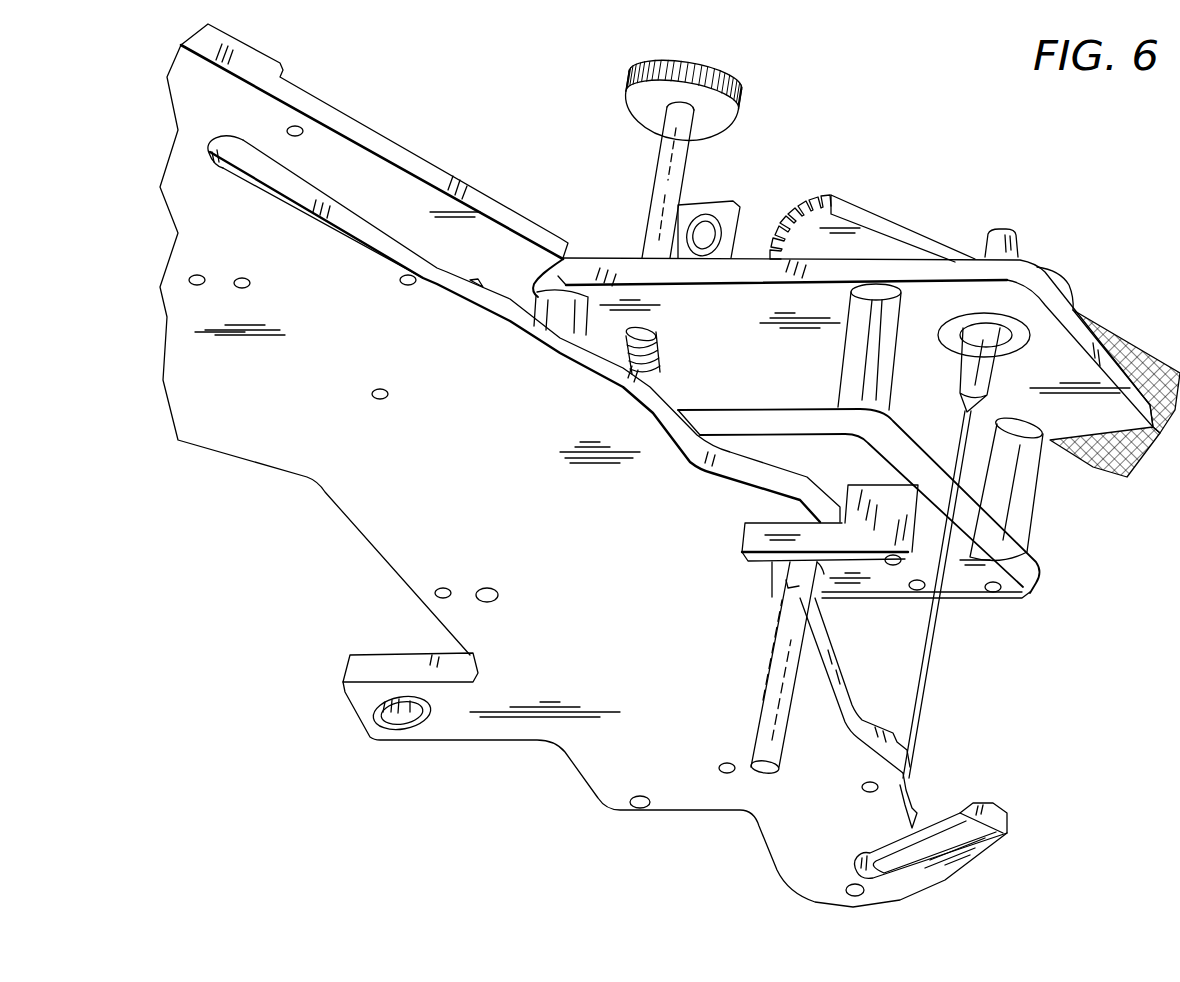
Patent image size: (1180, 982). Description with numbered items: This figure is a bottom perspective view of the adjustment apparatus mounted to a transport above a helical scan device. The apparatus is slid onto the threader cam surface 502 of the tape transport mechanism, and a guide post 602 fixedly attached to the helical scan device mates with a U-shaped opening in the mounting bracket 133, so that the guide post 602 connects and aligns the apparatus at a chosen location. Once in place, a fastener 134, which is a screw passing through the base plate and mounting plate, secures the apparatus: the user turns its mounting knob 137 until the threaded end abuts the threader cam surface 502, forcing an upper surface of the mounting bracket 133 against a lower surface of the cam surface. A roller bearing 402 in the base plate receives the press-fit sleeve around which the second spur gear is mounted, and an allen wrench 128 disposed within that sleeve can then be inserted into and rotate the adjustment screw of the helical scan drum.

The allen wrench 128 is at (927, 712).
The mounting bracket 133 is at (887, 583).
The fastener 134 is at (663, 197).
The mounting knob 137 is at (743, 105).
The roller bearing 402 is at (1017, 333).
The threader cam surface 502 is at (805, 505).
The guide post 602 is at (900, 772).